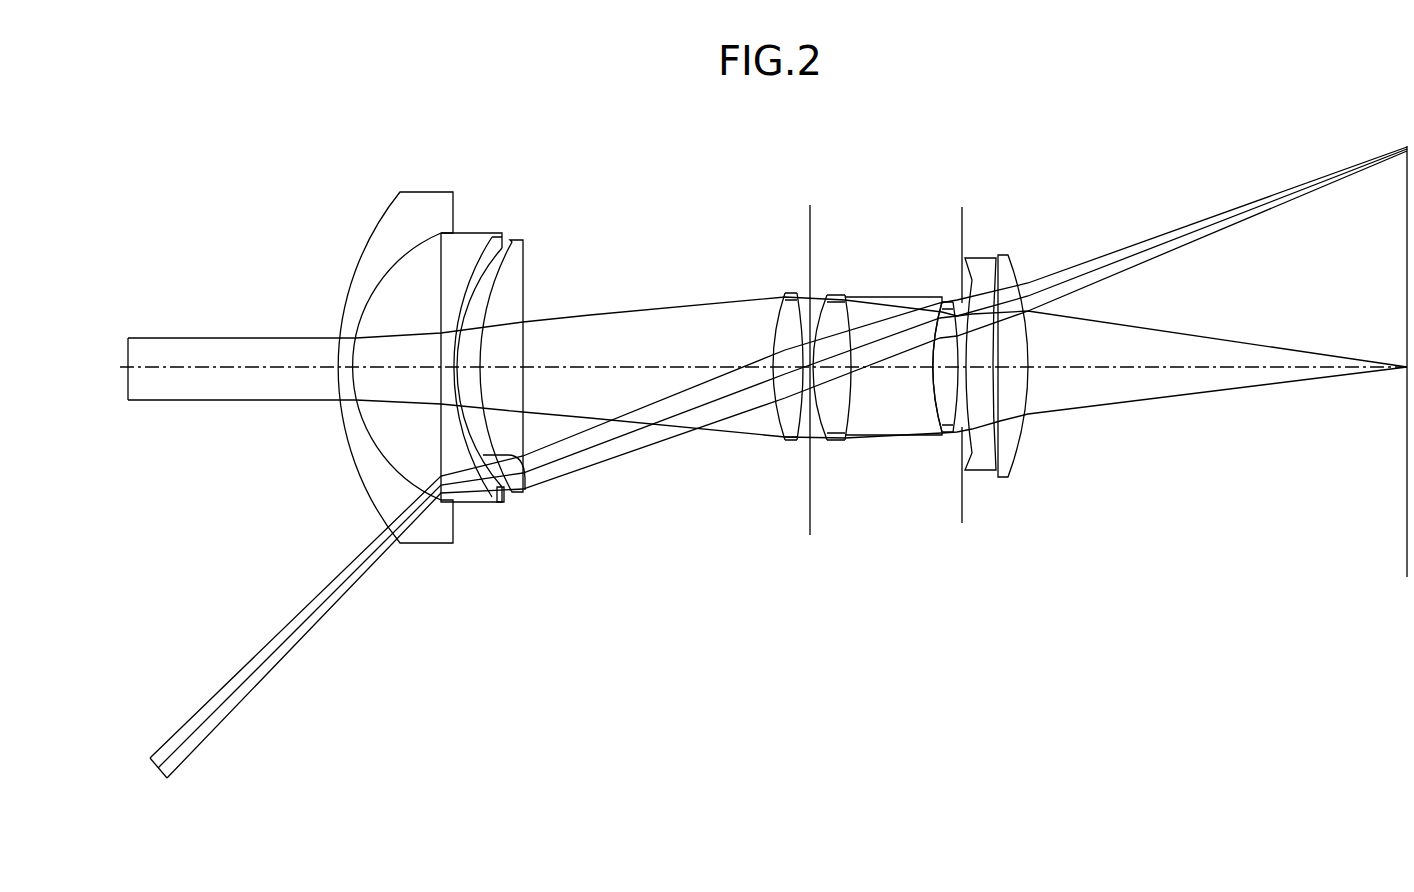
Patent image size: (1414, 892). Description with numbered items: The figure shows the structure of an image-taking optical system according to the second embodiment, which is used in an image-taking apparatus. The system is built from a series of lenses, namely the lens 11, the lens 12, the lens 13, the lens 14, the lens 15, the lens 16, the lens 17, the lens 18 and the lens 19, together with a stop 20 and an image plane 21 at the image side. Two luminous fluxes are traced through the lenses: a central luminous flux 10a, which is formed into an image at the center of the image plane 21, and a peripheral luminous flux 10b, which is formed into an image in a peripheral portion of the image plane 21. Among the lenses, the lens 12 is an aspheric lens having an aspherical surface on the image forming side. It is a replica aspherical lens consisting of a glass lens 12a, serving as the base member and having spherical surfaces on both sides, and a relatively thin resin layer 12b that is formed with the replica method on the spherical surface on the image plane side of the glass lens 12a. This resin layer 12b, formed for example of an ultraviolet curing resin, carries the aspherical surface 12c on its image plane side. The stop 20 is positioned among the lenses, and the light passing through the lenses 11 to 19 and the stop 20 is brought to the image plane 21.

The central luminous flux 10a is at (118, 338).
The peripheral luminous flux 10b is at (130, 752).
The lens 11 is at (416, 196).
The aspheric lens 12 is at (528, 450).
The glass lens 12a is at (480, 505).
The resin layer 12b is at (503, 503).
The aspherical surface 12c is at (549, 498).
The lens 13 is at (520, 240).
The lens 14 is at (793, 296).
The lens 15 is at (840, 295).
The lens 16 is at (896, 297).
The lens 17 is at (947, 303).
The lens 18 is at (982, 262).
The lens 19 is at (1008, 262).
The stop 20 is at (812, 512).
The image plane 21 is at (1407, 526).